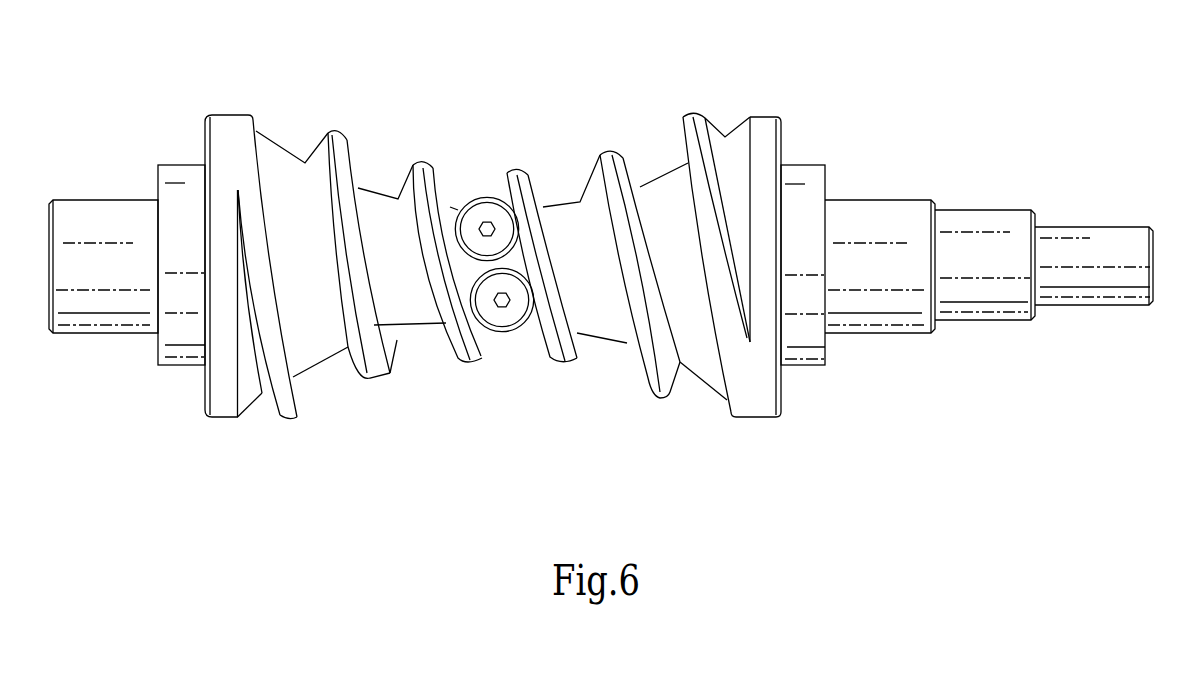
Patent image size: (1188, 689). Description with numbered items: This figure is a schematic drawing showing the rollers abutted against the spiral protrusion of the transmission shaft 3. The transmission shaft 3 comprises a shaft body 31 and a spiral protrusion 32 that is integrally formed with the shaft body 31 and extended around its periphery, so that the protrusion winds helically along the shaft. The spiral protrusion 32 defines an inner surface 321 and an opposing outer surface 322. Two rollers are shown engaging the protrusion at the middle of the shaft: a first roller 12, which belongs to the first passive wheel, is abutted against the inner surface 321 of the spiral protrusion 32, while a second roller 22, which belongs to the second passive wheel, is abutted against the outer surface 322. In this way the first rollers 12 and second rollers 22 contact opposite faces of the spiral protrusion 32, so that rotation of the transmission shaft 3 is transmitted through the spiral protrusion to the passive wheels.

The transmission shaft 3 is at (601, 246).
The shaft body 31 is at (890, 223).
The spiral protrusion 32 is at (494, 277).
The inner surface 321 is at (410, 188).
The outer surface 322 is at (485, 342).
The first rollers 12 is at (482, 207).
The second rollers 22 is at (500, 322).